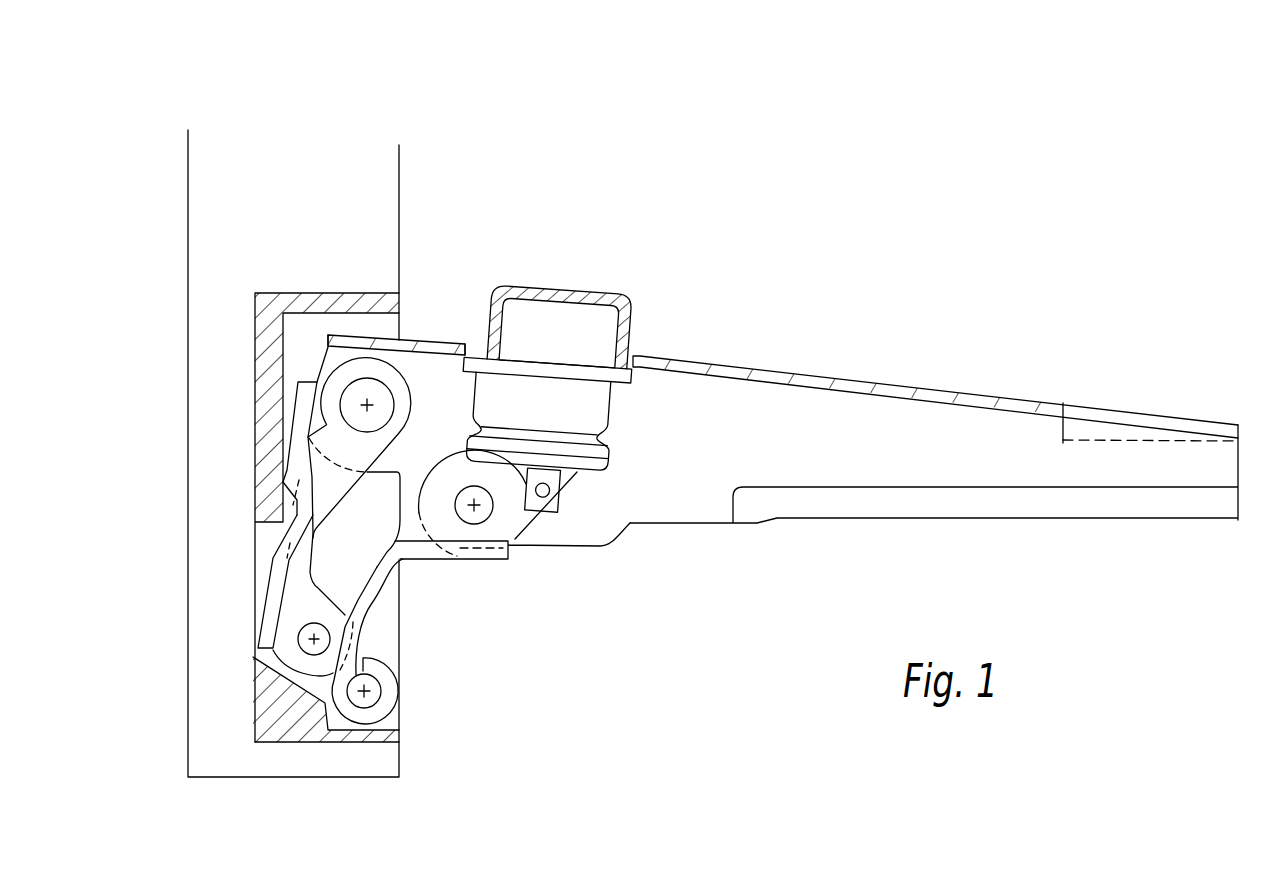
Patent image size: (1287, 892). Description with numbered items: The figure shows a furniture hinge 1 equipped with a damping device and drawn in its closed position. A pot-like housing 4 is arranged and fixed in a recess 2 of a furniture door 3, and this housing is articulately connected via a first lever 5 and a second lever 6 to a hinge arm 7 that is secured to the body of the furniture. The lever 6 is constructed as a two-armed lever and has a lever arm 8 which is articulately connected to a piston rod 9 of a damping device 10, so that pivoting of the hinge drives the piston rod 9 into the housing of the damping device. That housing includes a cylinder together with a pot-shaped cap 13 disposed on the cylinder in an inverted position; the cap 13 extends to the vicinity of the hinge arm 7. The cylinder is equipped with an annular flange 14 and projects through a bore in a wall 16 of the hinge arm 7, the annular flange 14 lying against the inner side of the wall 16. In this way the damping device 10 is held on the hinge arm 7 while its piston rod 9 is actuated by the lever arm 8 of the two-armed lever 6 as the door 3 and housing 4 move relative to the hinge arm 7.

The lever arm 1 is at (753, 362).
The recess 2 is at (260, 547).
The furniture door 3 is at (210, 217).
The pot-like housing 4 is at (267, 320).
The lever 5 is at (315, 467).
The lever 6 is at (377, 582).
The hinge arm 7 is at (822, 412).
The lever arm 8 is at (510, 495).
The piston rod 9 is at (557, 505).
The damping device 10 is at (628, 408).
The pot-shaped cap 13 is at (627, 297).
The annular flange 14 is at (633, 357).
The wall 16 is at (940, 398).